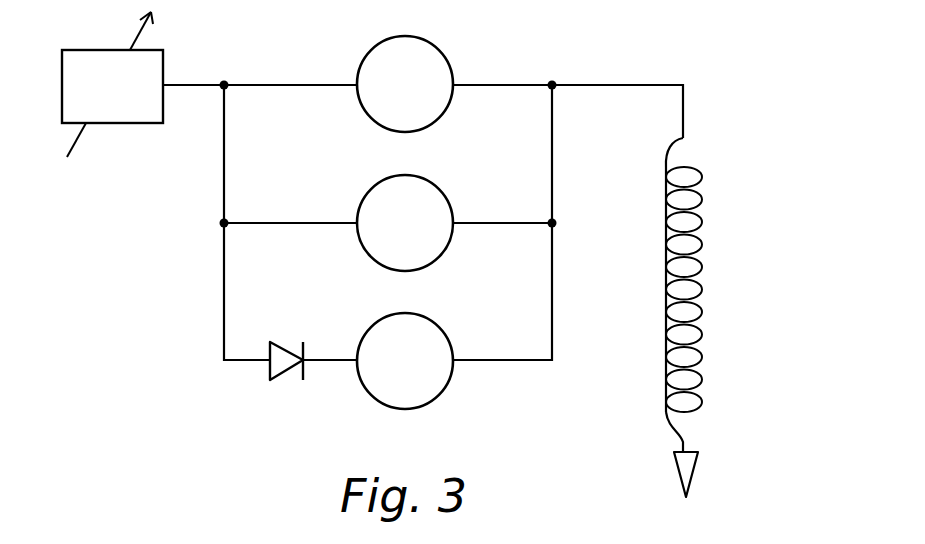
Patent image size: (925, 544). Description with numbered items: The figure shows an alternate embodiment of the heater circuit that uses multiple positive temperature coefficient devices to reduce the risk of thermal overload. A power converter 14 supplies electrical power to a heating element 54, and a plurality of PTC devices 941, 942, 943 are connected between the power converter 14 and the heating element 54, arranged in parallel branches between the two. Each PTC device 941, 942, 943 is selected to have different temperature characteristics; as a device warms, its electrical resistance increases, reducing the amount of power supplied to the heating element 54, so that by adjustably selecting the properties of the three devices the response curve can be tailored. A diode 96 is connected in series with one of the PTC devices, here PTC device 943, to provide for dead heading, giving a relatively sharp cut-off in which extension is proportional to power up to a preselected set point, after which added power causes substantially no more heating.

The power converter 14 is at (111, 50).
The PTC device 941 is at (445, 52).
The PTC device 942 is at (445, 192).
The PTC device 943 is at (445, 330).
The diode 96 is at (290, 373).
The heating element 54 is at (702, 293).